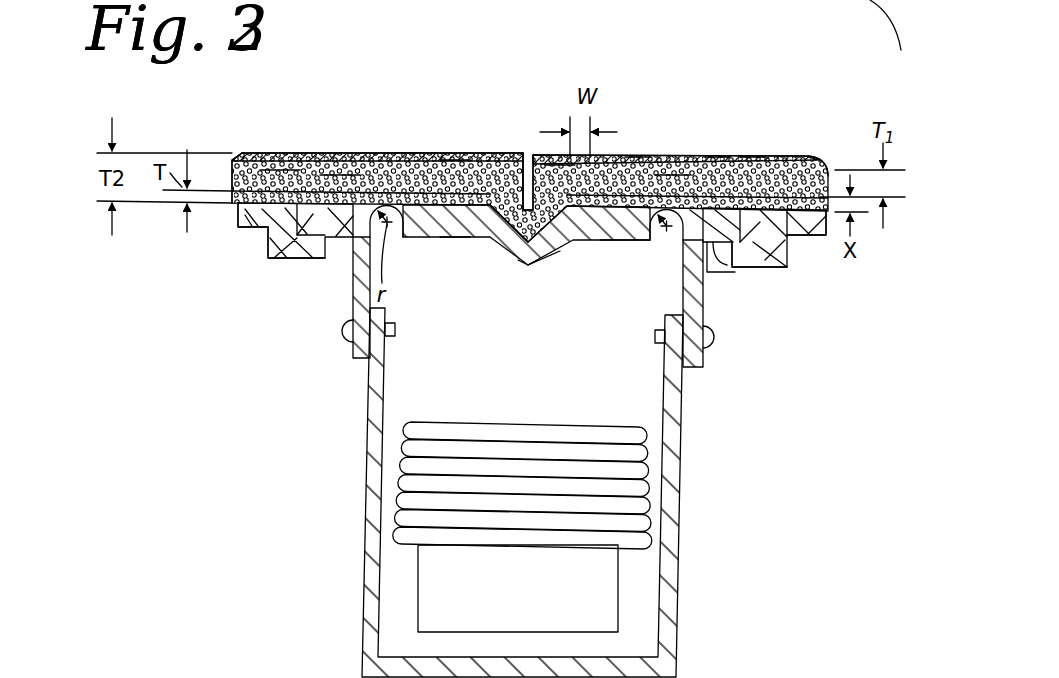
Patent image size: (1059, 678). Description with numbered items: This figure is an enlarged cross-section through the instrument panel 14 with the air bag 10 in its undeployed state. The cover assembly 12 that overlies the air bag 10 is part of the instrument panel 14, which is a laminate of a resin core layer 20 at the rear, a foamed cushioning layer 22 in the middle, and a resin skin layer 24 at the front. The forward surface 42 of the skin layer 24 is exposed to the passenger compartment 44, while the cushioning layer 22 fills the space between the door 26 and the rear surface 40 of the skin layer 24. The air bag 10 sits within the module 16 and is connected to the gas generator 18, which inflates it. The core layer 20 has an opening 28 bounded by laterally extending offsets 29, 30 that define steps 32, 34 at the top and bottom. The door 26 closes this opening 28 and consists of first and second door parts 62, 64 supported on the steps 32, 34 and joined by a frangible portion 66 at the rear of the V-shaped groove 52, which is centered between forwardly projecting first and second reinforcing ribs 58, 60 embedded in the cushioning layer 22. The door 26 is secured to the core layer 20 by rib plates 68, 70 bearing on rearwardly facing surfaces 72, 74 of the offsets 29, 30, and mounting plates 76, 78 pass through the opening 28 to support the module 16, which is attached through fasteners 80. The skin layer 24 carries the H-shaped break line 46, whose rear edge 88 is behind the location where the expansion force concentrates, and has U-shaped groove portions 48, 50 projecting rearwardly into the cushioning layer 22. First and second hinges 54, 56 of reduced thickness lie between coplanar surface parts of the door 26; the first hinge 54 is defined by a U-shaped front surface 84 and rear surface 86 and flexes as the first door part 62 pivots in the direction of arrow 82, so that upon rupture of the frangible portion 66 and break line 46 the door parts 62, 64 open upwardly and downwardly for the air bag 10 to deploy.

The air bag 10 is at (600, 425).
The cover assembly 12 is at (661, 116).
The instrument panel 14 is at (858, 108).
The module 16 is at (672, 523).
The gas generator 18 is at (600, 603).
The core layer 20 is at (824, 240).
The cushioning layer 22 is at (782, 157).
The skin layer 24 is at (718, 157).
The door 26 is at (595, 242).
The opening 28 is at (322, 260).
The offset 29 is at (297, 260).
The offset 30 is at (750, 273).
The step 32 is at (328, 215).
The step 34 is at (752, 157).
The rear surface 40 is at (305, 230).
The forward surface 42 is at (408, 152).
The passenger compartment 44 is at (613, 58).
The break line 46 is at (524, 150).
The groove portion 48 is at (390, 152).
The groove portion 50 is at (668, 160).
The groove 52 is at (528, 266).
The first hinge 54 is at (445, 200).
The second hinge 56 is at (633, 157).
The first reinforcing rib 58 is at (492, 215).
The second reinforcing rib 60 is at (562, 165).
The first door part 62 is at (450, 238).
The second door part 64 is at (613, 240).
The frangible portion 66 is at (560, 250).
The rib plate 68 is at (330, 265).
The rib plate 70 is at (738, 272).
The rearwardly facing surface 72 is at (279, 261).
The rearwardly facing surface 74 is at (742, 273).
The mounting plate 76 is at (348, 345).
The mounting plate 78 is at (704, 358).
The fastener 80 is at (397, 333).
The arrow 82 is at (890, 23).
The front surface 84 is at (368, 195).
The rear surface 86 is at (393, 238).
The rear edge 88 is at (588, 243).